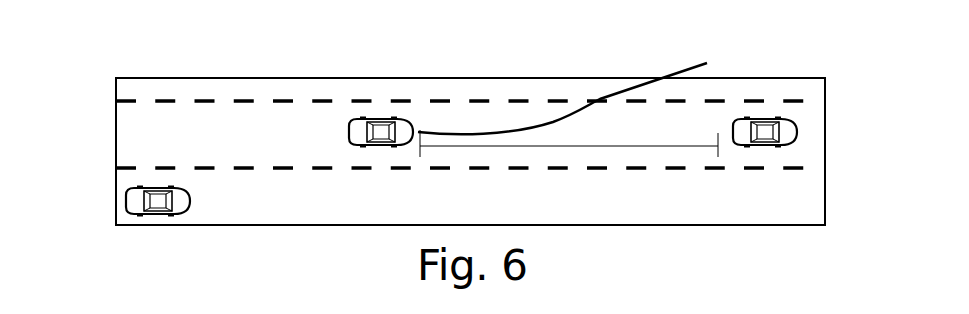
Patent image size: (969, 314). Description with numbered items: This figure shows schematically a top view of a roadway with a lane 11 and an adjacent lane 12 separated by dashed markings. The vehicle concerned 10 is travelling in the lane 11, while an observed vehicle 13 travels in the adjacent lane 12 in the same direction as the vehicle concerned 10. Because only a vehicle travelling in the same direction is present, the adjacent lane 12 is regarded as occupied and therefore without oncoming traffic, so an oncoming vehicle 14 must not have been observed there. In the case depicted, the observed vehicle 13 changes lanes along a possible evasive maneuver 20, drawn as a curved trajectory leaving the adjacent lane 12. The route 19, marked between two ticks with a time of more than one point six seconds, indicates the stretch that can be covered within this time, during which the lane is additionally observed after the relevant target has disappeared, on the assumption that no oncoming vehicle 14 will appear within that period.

The vehicle concerned 10 is at (138, 193).
The lane 11 is at (805, 195).
The adjacent lane 12 is at (805, 128).
The vehicle 13 is at (401, 128).
The oncoming vehicle 14 is at (765, 120).
The route 19 is at (613, 148).
The evasive maneuver 20 is at (622, 80).